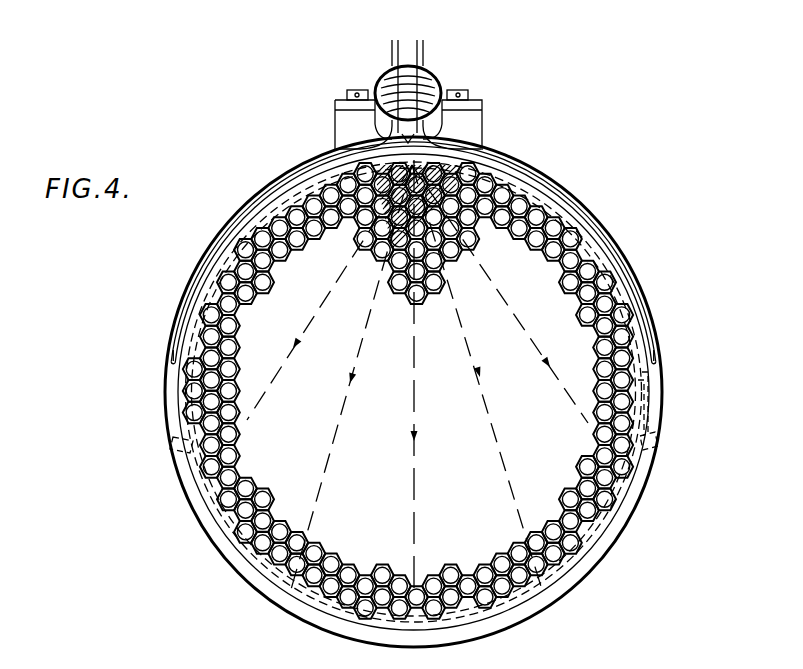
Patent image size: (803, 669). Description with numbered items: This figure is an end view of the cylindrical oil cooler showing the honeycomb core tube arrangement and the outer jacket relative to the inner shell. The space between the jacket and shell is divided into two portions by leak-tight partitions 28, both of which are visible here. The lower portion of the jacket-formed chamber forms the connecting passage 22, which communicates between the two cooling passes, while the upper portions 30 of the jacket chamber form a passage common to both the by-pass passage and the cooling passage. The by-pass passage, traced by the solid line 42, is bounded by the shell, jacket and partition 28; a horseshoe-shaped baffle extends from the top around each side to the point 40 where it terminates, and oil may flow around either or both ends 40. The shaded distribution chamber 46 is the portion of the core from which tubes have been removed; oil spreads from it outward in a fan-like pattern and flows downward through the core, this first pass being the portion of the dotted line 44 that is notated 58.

The connecting passage 22 is at (555, 598).
The leak-tight partition 28 is at (186, 446).
The upper portion of the jacket chamber 30 is at (194, 288).
The end of the baffle 40 is at (174, 360).
The solid line tracing the by-pass passage 42 is at (262, 204).
The dotted line indicating cooling passage flow 44 is at (308, 170).
The distribution chamber 46 is at (432, 252).
The first pass 58 is at (414, 441).